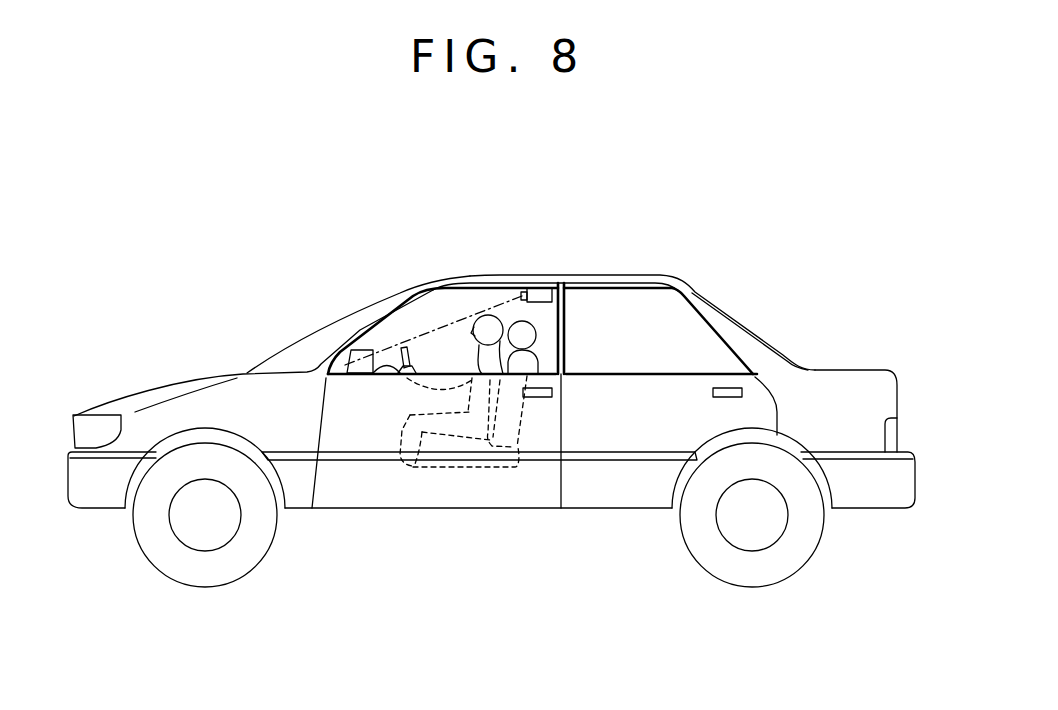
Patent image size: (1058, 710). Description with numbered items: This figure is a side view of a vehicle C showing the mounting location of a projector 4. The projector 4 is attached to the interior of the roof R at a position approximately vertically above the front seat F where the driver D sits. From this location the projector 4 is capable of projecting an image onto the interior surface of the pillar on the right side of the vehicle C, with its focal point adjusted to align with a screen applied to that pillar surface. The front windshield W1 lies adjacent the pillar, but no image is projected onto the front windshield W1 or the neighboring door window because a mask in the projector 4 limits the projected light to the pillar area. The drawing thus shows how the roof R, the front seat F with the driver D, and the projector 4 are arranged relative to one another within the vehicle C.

The vehicle C is at (146, 390).
The front windshield W1 is at (327, 337).
The roof R is at (613, 275).
The driver D is at (486, 317).
The front seat F is at (540, 333).
The projector 4 is at (539, 288).